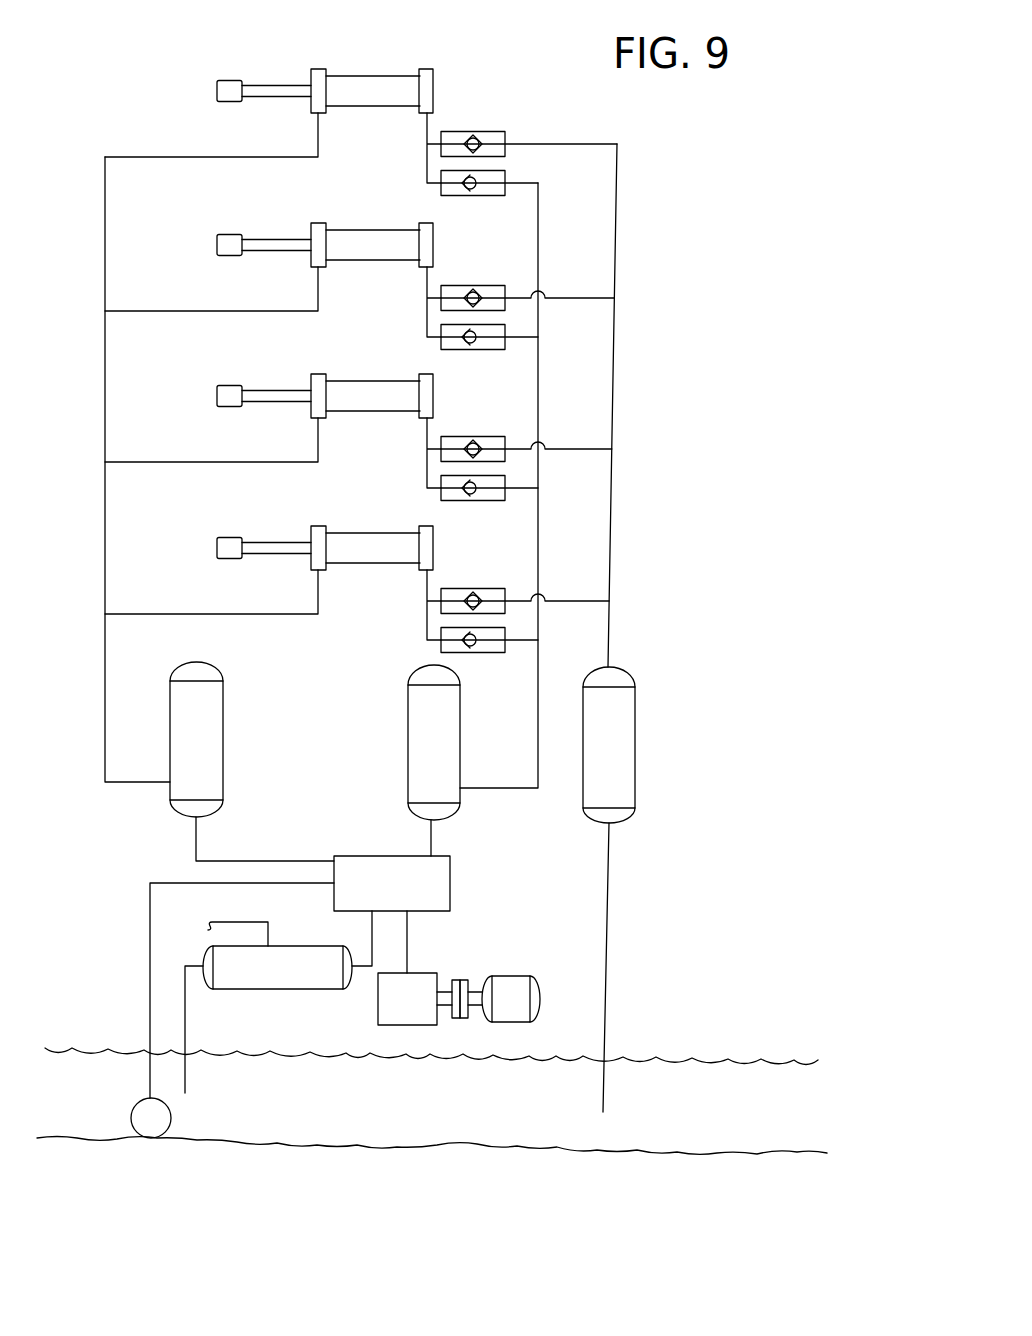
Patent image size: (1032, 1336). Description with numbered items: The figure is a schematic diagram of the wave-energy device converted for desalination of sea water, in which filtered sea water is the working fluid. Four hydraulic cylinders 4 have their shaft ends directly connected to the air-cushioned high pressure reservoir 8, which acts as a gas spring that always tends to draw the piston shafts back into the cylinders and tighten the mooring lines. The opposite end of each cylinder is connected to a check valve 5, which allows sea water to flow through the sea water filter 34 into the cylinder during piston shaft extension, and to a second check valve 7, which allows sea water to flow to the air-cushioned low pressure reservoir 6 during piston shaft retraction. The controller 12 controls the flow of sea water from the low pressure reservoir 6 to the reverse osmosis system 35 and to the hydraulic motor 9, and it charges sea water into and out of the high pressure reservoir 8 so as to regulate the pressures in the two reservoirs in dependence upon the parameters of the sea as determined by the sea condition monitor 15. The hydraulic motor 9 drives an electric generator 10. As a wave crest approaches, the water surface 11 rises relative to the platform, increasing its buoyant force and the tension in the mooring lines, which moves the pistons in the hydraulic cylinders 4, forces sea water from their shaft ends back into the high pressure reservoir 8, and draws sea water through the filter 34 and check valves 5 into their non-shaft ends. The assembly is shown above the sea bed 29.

The hydraulic cylinder 4 is at (434, 93).
The check valve 5 is at (494, 131).
The second check valve 7 is at (494, 197).
The low pressure reservoir 6 is at (460, 721).
The high pressure reservoir 8 is at (224, 726).
The sea water filter 34 is at (636, 767).
The controller 12 is at (404, 898).
The hydraulic motor 9 is at (414, 1012).
The electric generator 10 is at (540, 985).
The reverse osmosis system 35 is at (273, 992).
The sea condition monitor 15 is at (172, 1120).
The water surface 11 is at (375, 1066).
The sea bed 29 is at (509, 1143).